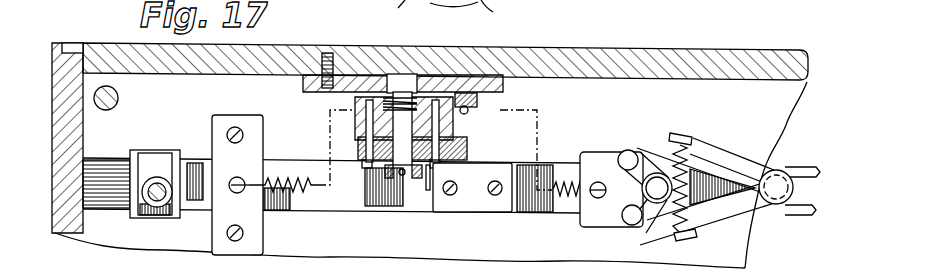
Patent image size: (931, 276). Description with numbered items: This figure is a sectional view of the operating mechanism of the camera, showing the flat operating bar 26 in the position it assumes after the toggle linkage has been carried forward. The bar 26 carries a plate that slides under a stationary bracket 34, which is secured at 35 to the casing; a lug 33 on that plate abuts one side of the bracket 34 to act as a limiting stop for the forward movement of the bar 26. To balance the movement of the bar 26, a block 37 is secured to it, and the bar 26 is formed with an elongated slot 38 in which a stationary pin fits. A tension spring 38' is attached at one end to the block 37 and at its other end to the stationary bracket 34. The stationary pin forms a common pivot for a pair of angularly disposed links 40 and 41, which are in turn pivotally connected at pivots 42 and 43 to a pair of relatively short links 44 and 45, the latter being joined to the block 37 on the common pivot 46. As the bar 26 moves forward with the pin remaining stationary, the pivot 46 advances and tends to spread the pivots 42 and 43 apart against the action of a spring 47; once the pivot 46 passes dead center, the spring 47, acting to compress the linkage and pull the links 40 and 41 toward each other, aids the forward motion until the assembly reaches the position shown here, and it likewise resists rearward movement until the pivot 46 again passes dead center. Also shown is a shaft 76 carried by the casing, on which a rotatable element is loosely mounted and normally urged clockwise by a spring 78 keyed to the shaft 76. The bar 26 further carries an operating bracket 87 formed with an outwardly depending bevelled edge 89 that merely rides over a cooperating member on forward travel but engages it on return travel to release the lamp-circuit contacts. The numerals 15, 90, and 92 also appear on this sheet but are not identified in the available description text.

The housing / frame 15 is at (40, 130).
The operating bar 26 is at (344, 205).
The lug 33 is at (155, 184).
The bracket 34 is at (213, 134).
The securing point 35 is at (230, 190).
The block 37 is at (598, 152).
The elongated slot 38 is at (778, 212).
The tension spring 38' is at (571, 156).
The link 40 is at (728, 163).
The link 41 is at (709, 212).
The pivot 42 is at (630, 150).
The pivot 43 is at (630, 222).
The short link 44 is at (643, 150).
The short link 45 is at (672, 215).
The common pivot 46 is at (654, 188).
The spring 47 is at (701, 216).
The shaft 76 is at (396, 128).
The spring 78 is at (452, 108).
The operating bracket 87 is at (463, 206).
The bevelled edge 89 is at (427, 187).
The element of adjacent figure 90 is at (500, 14).
The element of adjacent figure 92 is at (378, 14).